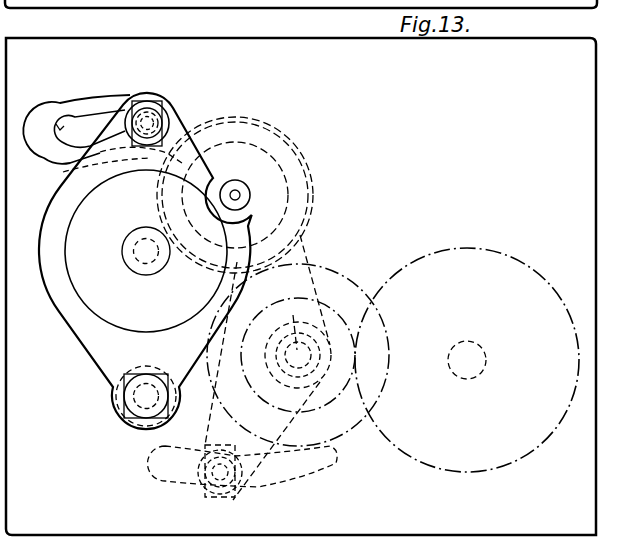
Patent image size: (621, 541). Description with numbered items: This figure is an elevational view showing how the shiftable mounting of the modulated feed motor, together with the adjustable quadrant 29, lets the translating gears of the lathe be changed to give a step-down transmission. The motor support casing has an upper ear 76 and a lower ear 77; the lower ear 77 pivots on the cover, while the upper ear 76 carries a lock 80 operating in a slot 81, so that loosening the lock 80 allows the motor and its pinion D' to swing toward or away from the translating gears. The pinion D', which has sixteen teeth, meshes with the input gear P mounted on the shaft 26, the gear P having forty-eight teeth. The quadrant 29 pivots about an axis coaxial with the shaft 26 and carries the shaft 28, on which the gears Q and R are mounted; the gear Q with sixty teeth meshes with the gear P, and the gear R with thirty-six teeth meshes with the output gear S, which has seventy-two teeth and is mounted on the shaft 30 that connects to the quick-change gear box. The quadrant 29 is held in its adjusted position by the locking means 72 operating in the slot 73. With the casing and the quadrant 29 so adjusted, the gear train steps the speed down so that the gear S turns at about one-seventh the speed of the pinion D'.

The shaft 26 is at (249, 194).
The shaft 28 is at (293, 315).
The quadrant 29 is at (258, 460).
The shaft 30 is at (470, 357).
The locking means 72 is at (233, 495).
The slot 73 is at (337, 461).
The upper ear 76 is at (97, 155).
The lower ear 77 is at (96, 366).
The lock 80 is at (150, 115).
The slot 81 is at (143, 400).
The gear P is at (289, 137).
The gear Q is at (339, 274).
The gear R is at (329, 307).
The gear S is at (490, 249).
The pinion D' is at (146, 251).